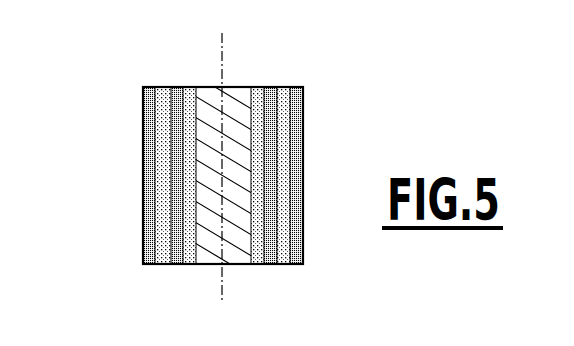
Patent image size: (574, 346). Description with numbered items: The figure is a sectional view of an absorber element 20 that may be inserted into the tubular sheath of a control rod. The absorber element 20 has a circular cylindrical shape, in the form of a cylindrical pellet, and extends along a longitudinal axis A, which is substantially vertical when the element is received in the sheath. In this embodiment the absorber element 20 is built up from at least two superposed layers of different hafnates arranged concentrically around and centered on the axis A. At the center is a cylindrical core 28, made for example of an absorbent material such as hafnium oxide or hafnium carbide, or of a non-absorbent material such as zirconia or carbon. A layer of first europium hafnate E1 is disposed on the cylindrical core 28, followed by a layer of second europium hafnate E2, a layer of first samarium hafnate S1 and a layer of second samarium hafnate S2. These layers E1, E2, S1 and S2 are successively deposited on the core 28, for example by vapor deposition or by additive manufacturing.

The absorber element 20 is at (110, 165).
The cylindrical core 28 is at (214, 92).
The longitudinal axis A is at (222, 151).
The layer made of first samarium hafnate S1 is at (164, 264).
The layer made of second samarium hafnate S2 is at (150, 264).
The layer made of first europium hafnate E1 is at (188, 264).
The layer made of second europium hafnate E2 is at (177, 264).